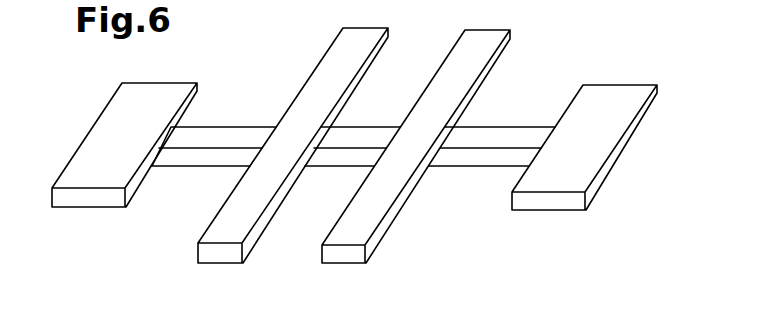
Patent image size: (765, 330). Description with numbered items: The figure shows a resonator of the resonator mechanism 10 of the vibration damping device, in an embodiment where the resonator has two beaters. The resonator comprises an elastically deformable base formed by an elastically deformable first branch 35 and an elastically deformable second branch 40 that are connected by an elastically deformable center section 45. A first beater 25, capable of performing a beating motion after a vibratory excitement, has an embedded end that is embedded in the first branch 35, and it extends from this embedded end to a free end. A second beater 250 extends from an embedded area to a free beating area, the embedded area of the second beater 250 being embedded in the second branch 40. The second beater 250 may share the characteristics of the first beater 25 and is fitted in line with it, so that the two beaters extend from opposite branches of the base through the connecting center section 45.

The resonator mechanism 10 is at (480, 251).
The first beater 25 is at (440, 176).
The first branch 35 is at (363, 223).
The second branch 40 is at (256, 240).
The center section 45 is at (367, 137).
The second beater 250 is at (167, 165).